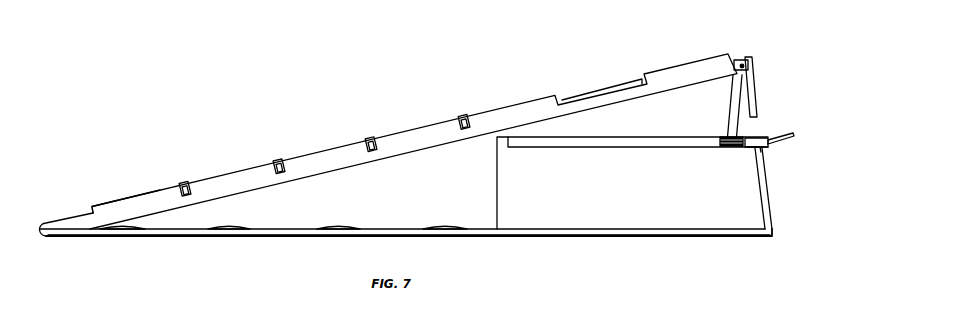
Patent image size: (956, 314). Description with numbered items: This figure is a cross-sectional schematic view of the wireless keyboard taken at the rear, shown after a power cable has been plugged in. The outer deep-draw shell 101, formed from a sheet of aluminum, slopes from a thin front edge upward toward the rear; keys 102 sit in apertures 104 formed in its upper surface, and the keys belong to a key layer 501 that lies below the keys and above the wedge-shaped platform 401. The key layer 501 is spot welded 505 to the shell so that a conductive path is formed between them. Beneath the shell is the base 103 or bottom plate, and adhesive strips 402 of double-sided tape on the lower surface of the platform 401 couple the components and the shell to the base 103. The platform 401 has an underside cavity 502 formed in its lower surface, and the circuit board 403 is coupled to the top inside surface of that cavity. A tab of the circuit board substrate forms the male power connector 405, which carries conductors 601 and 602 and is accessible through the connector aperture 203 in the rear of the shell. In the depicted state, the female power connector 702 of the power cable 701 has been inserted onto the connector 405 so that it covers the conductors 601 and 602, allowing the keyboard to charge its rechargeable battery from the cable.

The deep-draw shell 101 is at (62, 217).
The keys 102 is at (138, 194).
The base 103 is at (47, 237).
The apertures 104 is at (184, 183).
The connector aperture 203 is at (803, 110).
The platform 401 is at (293, 217).
The adhesive strips 402 is at (228, 230).
The circuit board 403 is at (537, 143).
The power connector 405 is at (713, 148).
The key layer 501 is at (298, 172).
The underside cavity 502 is at (562, 215).
The spot weld 505 is at (743, 58).
The conductor 601 is at (722, 134).
The conductor 602 is at (723, 148).
The power cable 701 is at (794, 137).
The female power connector 702 is at (742, 148).